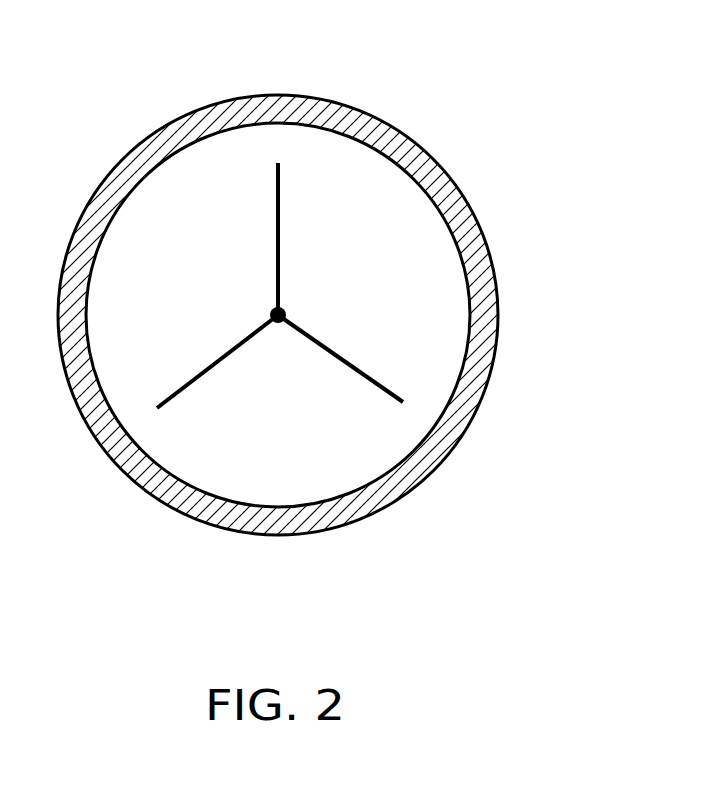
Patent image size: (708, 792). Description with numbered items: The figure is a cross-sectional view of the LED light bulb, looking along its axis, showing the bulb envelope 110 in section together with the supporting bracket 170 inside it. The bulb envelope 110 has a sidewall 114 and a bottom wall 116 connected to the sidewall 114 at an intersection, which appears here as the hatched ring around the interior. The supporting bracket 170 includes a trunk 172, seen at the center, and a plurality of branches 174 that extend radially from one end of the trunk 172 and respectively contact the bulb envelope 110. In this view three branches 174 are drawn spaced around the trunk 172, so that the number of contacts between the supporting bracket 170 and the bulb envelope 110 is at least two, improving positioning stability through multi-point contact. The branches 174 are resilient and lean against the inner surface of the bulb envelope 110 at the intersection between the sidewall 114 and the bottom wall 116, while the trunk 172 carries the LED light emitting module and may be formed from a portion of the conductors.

The bulb envelope 110 is at (340, 318).
The sidewall 114 is at (450, 435).
The bottom wall 116 is at (397, 200).
The supporting bracket 170 is at (389, 318).
The trunk 172 is at (286, 318).
The branches 174 is at (278, 207).